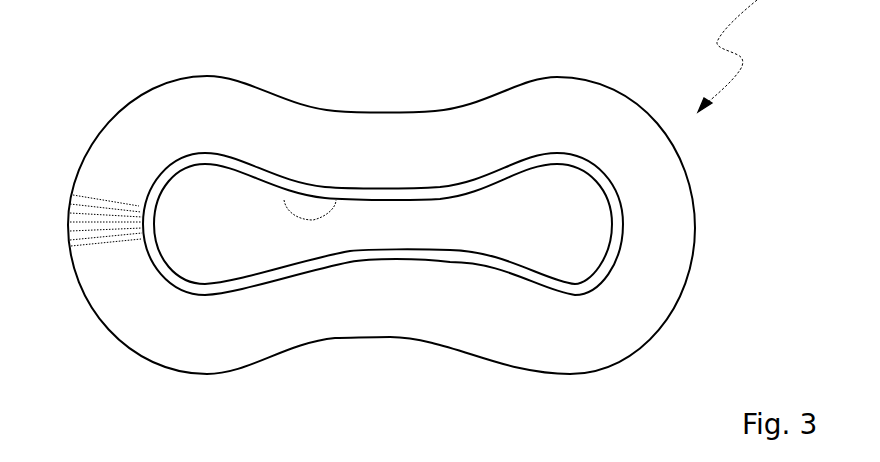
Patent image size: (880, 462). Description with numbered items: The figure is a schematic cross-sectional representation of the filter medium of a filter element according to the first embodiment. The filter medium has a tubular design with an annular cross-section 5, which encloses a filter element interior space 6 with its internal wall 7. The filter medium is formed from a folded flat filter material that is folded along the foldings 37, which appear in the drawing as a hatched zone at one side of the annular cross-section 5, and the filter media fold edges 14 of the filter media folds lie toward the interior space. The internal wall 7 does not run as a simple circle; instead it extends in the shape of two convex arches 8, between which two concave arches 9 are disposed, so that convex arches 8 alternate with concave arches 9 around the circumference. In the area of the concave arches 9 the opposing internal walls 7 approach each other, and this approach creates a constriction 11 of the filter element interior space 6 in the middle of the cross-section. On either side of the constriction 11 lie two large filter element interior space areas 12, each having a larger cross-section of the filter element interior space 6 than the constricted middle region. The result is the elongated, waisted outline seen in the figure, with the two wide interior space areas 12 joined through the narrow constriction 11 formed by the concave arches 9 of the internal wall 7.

The annular cross-section 5 is at (605, 117).
The filter element interior space 6 is at (466, 237).
The internal wall 7 is at (284, 200).
The convex arches 8 is at (147, 257).
The concave arches 9 is at (405, 245).
The constriction 11 is at (358, 230).
The filter element interior space areas 12 is at (210, 211).
The filter media fold edges 14 is at (147, 223).
The foldings 37 is at (107, 200).